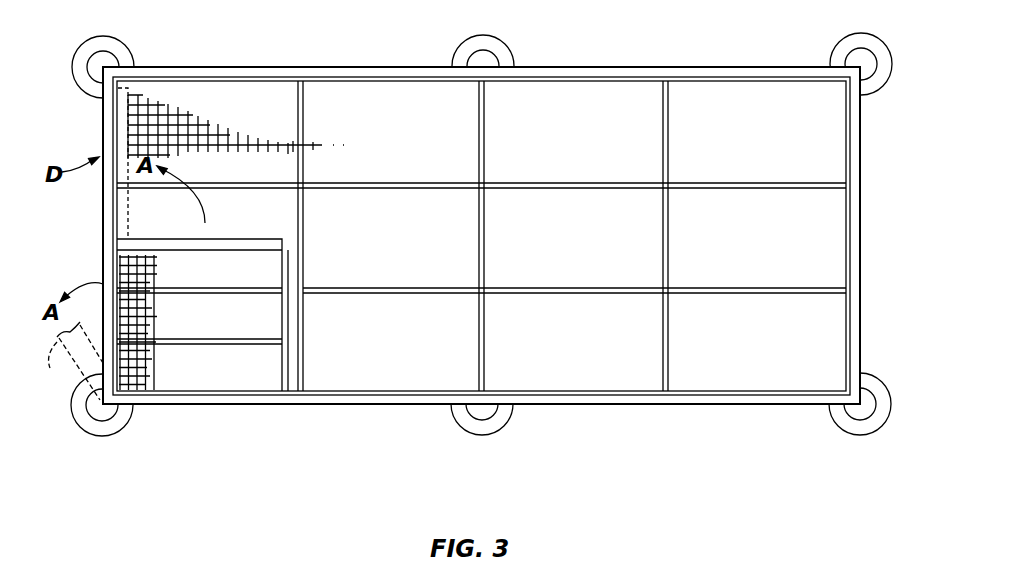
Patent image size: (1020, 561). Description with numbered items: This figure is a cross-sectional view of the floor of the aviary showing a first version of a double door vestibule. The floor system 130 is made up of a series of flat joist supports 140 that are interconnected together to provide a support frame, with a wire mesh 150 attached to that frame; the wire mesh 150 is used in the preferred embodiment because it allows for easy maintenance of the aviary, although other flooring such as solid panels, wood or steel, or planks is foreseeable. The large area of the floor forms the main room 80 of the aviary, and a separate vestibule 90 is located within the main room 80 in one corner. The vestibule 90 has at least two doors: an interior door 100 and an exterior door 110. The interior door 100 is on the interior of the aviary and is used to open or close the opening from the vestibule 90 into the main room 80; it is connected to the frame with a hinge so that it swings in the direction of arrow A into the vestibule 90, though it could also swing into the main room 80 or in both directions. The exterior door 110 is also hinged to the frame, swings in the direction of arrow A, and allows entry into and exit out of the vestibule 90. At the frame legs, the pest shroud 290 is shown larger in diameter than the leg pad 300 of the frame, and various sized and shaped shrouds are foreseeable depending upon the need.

The main room 80 is at (583, 252).
The vestibule 90 is at (212, 328).
The interior door 100 is at (223, 236).
The exterior door 110 is at (83, 379).
The floor system 130 is at (735, 405).
The flat joist supports 140 is at (722, 182).
The wire mesh 150 is at (193, 128).
The pest shroud 290 is at (498, 52).
The leg pad 300 is at (853, 50).